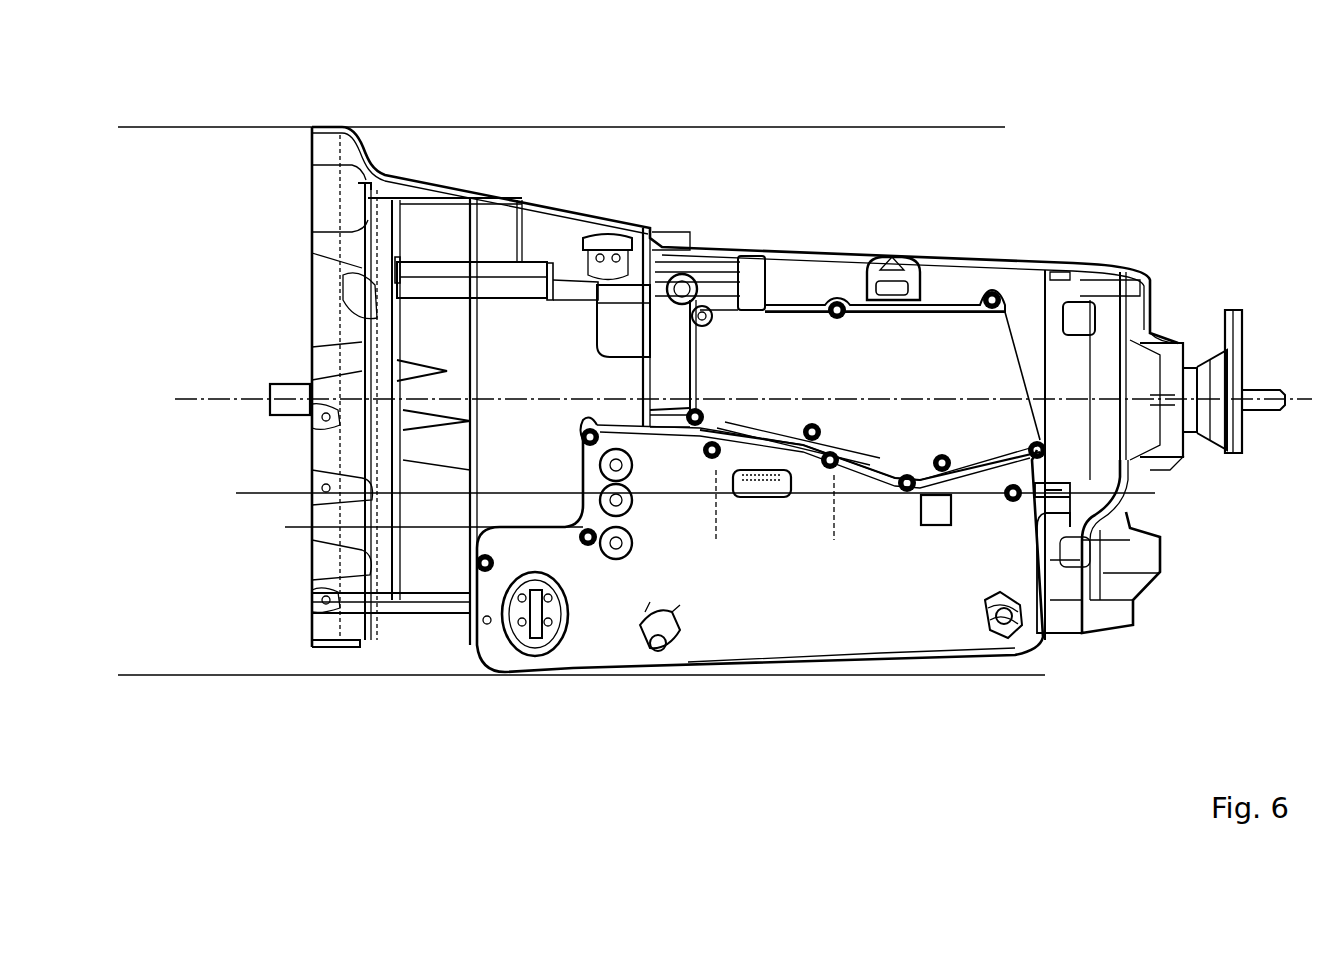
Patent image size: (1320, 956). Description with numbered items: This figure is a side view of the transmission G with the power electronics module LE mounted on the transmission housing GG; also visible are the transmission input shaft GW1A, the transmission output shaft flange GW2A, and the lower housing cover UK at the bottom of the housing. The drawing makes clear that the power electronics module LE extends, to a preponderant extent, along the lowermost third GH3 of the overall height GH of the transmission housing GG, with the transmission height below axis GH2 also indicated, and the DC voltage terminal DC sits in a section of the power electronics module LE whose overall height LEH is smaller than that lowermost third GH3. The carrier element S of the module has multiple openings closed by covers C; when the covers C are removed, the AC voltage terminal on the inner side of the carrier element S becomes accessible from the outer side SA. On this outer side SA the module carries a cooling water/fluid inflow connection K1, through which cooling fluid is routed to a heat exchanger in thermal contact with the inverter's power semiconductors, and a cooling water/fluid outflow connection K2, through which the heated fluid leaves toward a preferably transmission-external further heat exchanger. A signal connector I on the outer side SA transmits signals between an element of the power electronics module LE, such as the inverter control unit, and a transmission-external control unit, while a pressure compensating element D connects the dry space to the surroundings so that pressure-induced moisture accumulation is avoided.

The transmission G is at (1047, 168).
The transmission housing GG is at (538, 236).
The transmission input shaft GW1A is at (283, 382).
The transmission output shaft flange GW2A is at (1236, 310).
The power electronics module LE is at (1133, 530).
The lower housing cover UK is at (507, 675).
The DC voltage terminal DC is at (550, 655).
The cooling water/fluid inflow connection K1 is at (647, 665).
The cooling water/fluid outflow connection K2 is at (1010, 655).
The cover C is at (640, 465).
The signal connector I is at (765, 503).
The carrier element S is at (828, 600).
The outer side SA is at (882, 620).
The pressure compensating element D is at (934, 515).
The overall height GH is at (126, 675).
The transmission height below axis GH2 is at (185, 675).
The lowermost third GH3 is at (243, 675).
The overall height LEH is at (292, 527).